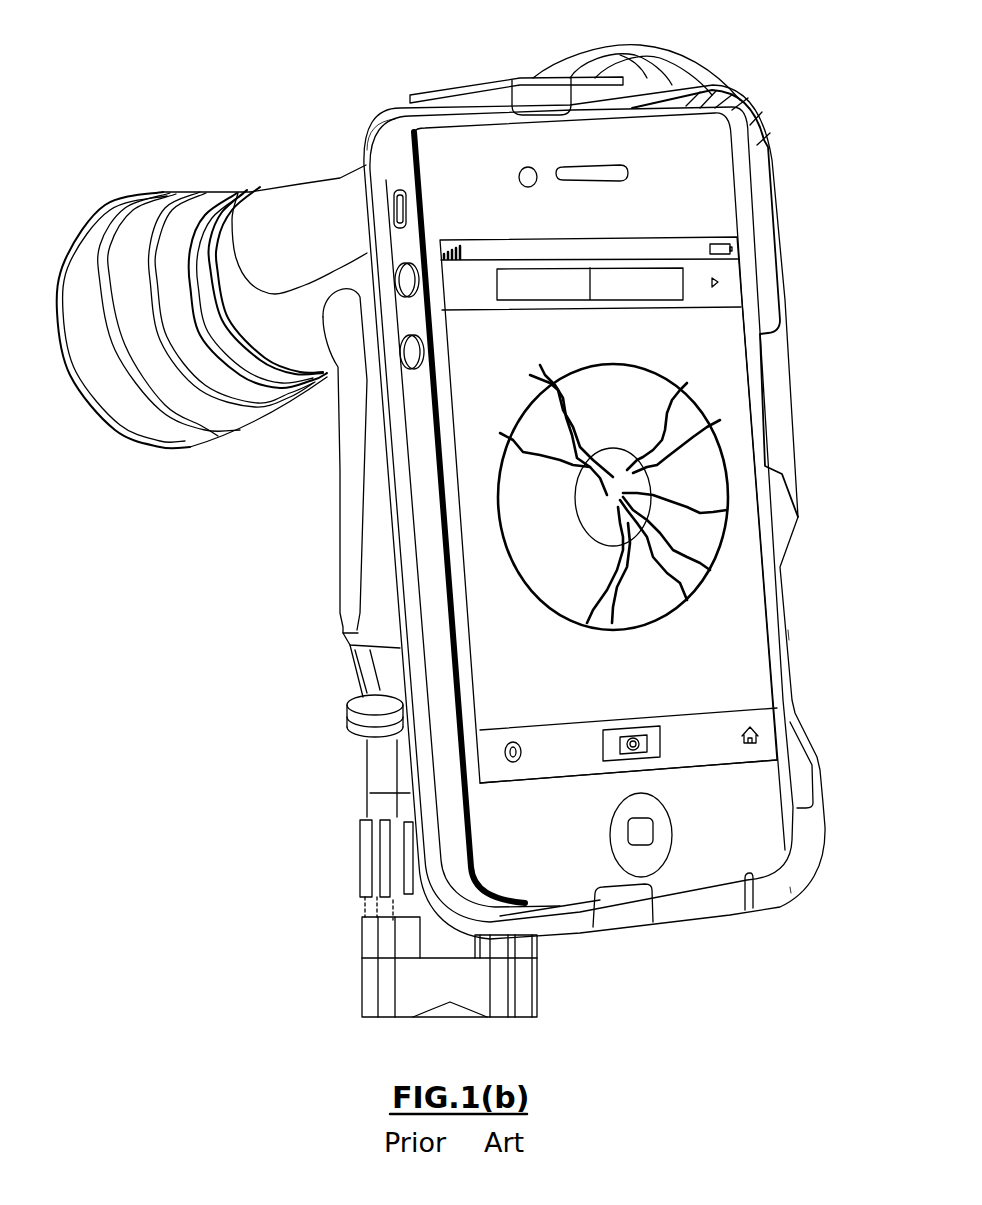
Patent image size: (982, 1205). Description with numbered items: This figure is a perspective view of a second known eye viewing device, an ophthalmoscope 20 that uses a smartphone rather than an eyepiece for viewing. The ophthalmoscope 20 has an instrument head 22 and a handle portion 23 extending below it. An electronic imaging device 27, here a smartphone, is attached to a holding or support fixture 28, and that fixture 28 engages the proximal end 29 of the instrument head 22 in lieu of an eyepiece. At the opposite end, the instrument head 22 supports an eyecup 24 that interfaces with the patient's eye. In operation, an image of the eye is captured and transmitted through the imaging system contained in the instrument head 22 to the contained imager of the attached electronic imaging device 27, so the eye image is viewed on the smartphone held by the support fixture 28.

The ophthalmoscope 20 is at (833, 60).
The instrument head 22 is at (292, 178).
The handle portion 23 is at (373, 987).
The eyecup 24 is at (160, 420).
The electronic imaging device 27 is at (790, 632).
The holding or support fixture 28 is at (400, 128).
The proximal end 29 is at (790, 887).